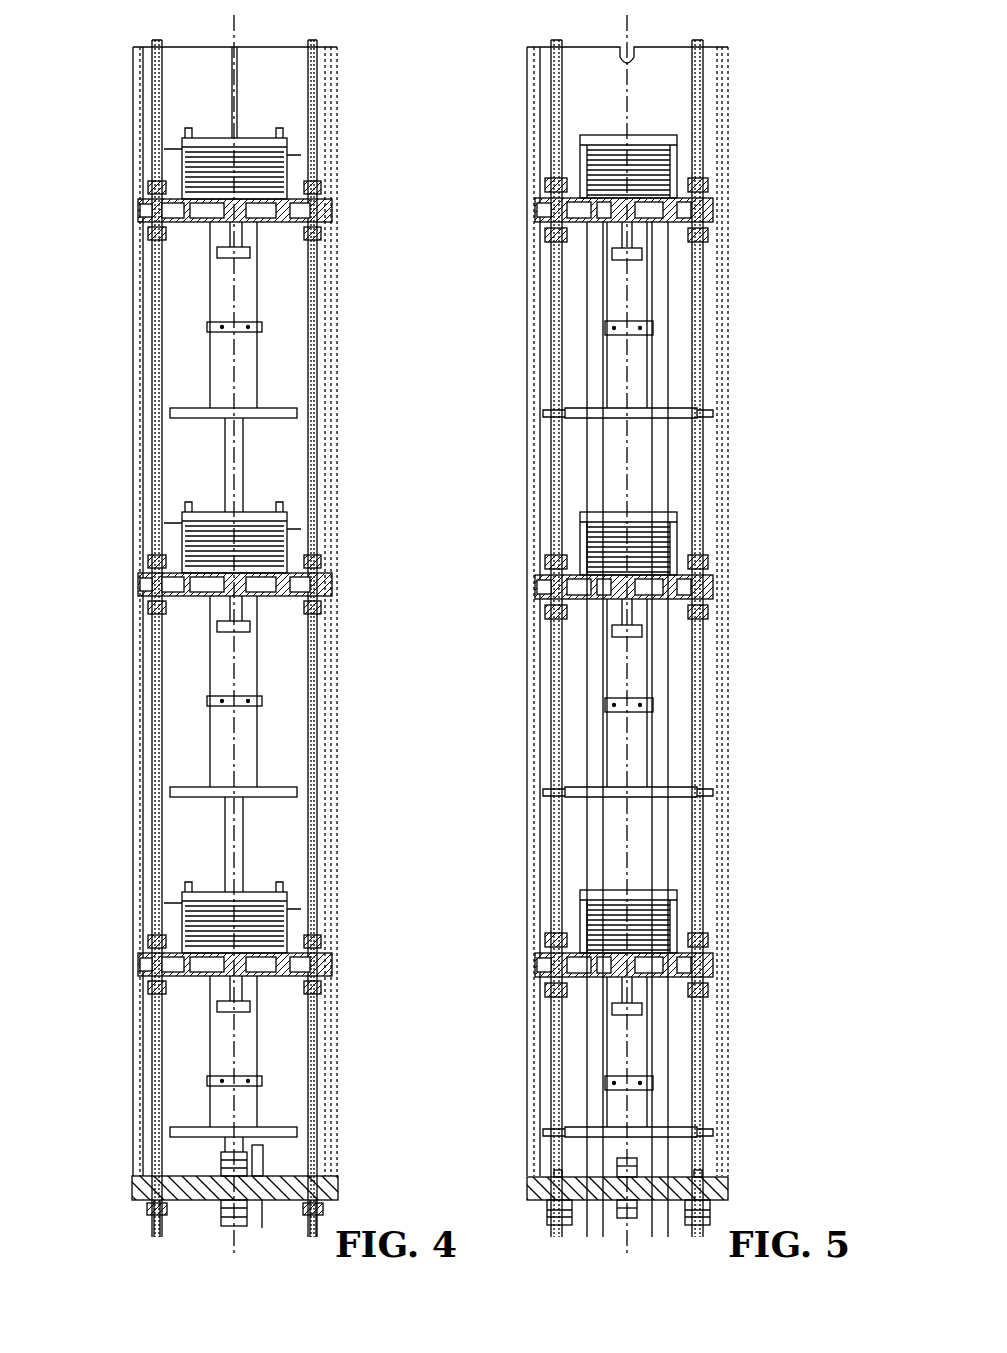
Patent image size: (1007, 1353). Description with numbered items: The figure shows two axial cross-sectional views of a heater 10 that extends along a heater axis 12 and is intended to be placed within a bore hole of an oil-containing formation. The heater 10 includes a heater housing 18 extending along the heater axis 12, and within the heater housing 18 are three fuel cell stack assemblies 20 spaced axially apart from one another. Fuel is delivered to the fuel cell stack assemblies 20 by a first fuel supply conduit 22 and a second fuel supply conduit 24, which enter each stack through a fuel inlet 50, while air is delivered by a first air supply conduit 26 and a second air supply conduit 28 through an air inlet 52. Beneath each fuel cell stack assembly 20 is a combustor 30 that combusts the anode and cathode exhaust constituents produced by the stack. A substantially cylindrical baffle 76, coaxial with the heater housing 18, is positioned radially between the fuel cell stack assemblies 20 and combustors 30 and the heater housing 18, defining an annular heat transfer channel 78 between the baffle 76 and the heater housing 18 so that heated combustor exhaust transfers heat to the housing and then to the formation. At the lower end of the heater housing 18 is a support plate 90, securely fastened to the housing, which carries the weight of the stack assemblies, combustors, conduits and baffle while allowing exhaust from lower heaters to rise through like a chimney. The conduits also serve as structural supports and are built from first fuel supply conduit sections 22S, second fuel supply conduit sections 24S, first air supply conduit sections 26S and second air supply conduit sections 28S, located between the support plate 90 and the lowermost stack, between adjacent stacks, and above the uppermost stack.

In FIG. 4, the heater 10 is at (133, 32).
In FIG. 5, the heater 10 is at (770, 32).
In FIG. 4, the heater axis 12 is at (236, 24).
In FIG. 5, the heater axis 12 is at (625, 24).
In FIG. 4, the heater housing 18 is at (133, 398).
In FIG. 5, the heater housing 18 is at (730, 462).
In FIG. 4, the fuel cell stack assembly 20 is at (175, 170).
In FIG. 5, the fuel cell stack assembly 20 is at (572, 167).
In FIG. 4, the first fuel supply conduit 22 is at (152, 448).
In FIG. 4, the first fuel supply conduit section 22S is at (152, 1090).
In FIG. 4, the second fuel supply conduit 24 is at (318, 448).
In FIG. 4, the second fuel supply conduit section 24S is at (313, 150).
In FIG. 5, the first air supply conduit 26 is at (550, 442).
In FIG. 5, the first air supply conduit section 26S is at (556, 1062).
In FIG. 5, the second air supply conduit 28 is at (705, 356).
In FIG. 5, the second air supply conduit section 28S is at (703, 128).
In FIG. 4, the combustor 30 is at (205, 263).
In FIG. 5, the combustor 30 is at (603, 259).
In FIG. 4, the fuel inlet 50 is at (200, 222).
In FIG. 5, the air inlet 52 is at (560, 205).
In FIG. 4, the baffle 76 is at (143, 323).
In FIG. 5, the baffle 76 is at (535, 387).
In FIG. 4, the heat transfer channel 78 is at (328, 386).
In FIG. 5, the heat transfer channel 78 is at (720, 392).
In FIG. 4, the support plate 90 is at (222, 1200).
In FIG. 5, the support plate 90 is at (612, 1200).